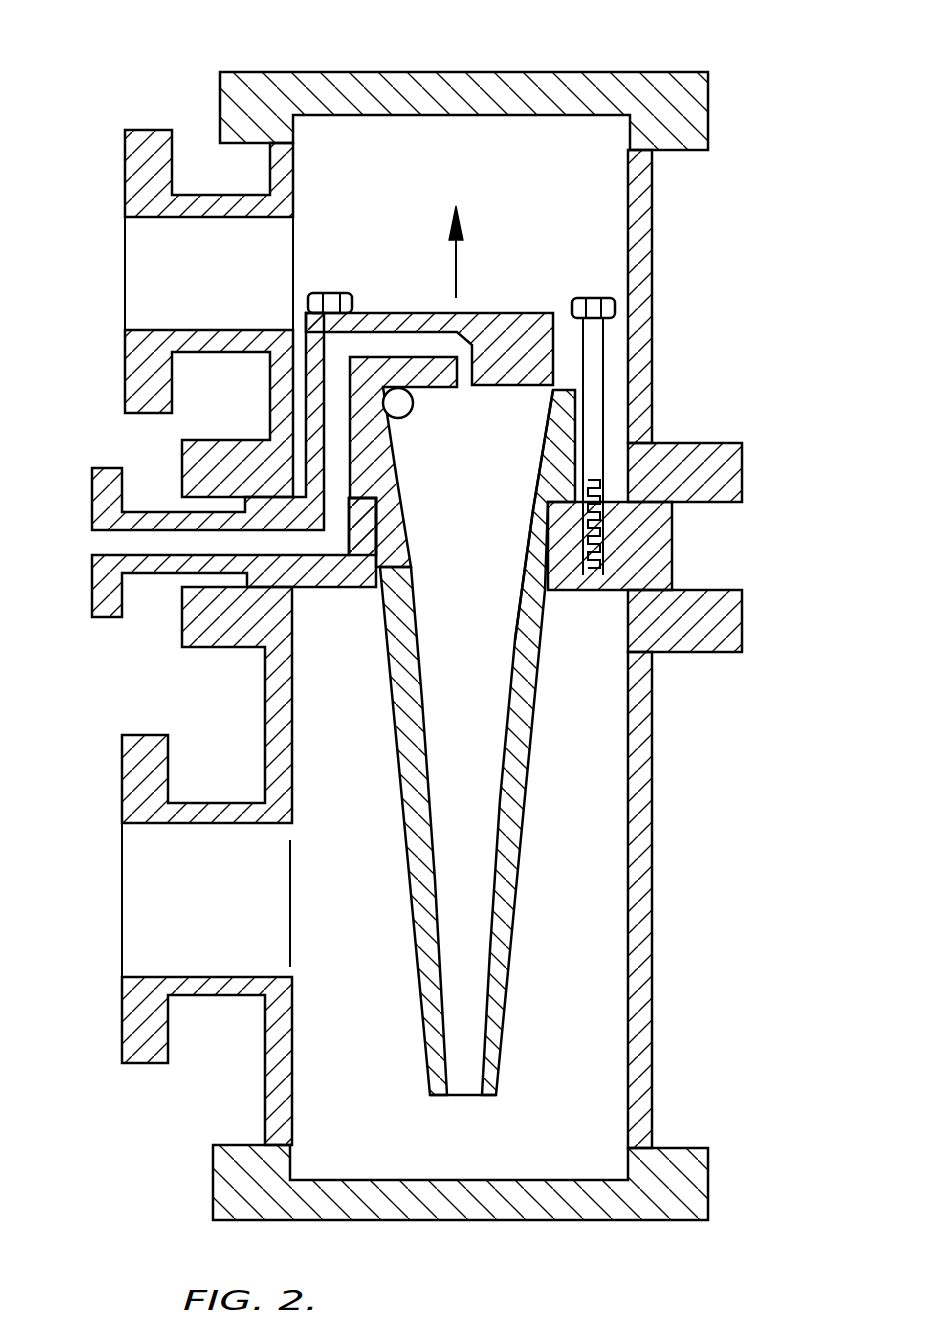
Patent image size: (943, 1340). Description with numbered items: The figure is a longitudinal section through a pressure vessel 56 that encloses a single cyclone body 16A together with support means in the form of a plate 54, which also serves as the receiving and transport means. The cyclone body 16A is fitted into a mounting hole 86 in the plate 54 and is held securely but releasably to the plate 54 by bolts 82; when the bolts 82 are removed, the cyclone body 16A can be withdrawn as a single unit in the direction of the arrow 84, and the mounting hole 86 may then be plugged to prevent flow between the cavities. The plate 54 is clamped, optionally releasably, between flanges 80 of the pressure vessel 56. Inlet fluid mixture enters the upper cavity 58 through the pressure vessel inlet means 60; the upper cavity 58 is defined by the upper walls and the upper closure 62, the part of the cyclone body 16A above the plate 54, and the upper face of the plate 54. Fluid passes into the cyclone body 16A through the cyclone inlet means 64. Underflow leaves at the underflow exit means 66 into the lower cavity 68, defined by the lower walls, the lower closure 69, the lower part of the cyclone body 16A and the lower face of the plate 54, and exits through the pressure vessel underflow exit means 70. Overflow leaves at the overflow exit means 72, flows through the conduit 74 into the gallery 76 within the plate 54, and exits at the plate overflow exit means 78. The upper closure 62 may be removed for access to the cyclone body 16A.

The cyclone body 16A is at (553, 447).
The plate 54 is at (650, 545).
The pressure vessel 56 is at (645, 295).
The upper cavity 58 is at (600, 222).
The pressure vessel inlet means 60 is at (143, 270).
The upper closure 62 is at (254, 92).
The cyclone inlet means 64 is at (400, 400).
The underflow exit means 66 is at (462, 1098).
The lower cavity 68 is at (590, 978).
The lower closure 69 is at (213, 1196).
The pressure vessel underflow exit means 70 is at (143, 898).
The overflow exit means 72 is at (470, 358).
The conduit 74 is at (337, 470).
The gallery 76 is at (338, 527).
The plate overflow exit means 78 is at (110, 545).
The flanges 80 is at (708, 478).
The bolts 82 is at (338, 305).
The arrow 84 is at (473, 250).
The mounting hole 86 is at (378, 575).